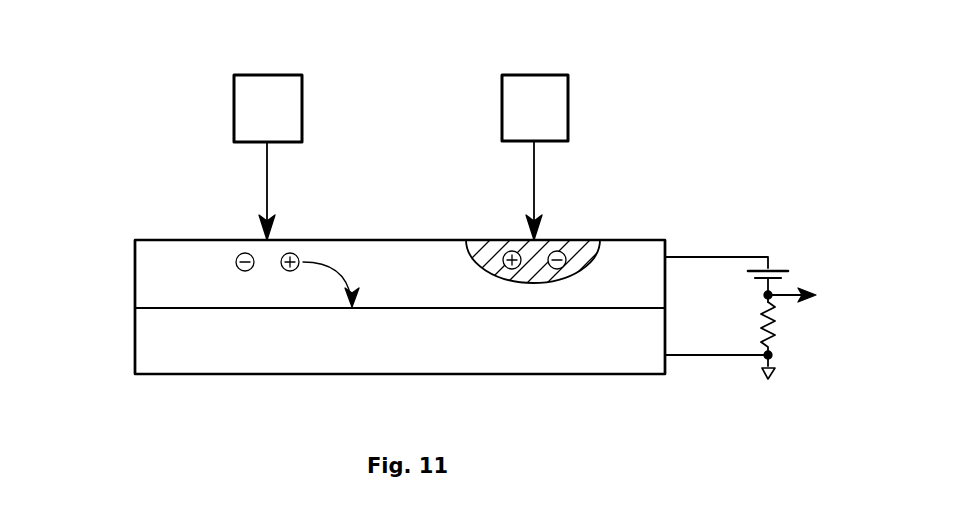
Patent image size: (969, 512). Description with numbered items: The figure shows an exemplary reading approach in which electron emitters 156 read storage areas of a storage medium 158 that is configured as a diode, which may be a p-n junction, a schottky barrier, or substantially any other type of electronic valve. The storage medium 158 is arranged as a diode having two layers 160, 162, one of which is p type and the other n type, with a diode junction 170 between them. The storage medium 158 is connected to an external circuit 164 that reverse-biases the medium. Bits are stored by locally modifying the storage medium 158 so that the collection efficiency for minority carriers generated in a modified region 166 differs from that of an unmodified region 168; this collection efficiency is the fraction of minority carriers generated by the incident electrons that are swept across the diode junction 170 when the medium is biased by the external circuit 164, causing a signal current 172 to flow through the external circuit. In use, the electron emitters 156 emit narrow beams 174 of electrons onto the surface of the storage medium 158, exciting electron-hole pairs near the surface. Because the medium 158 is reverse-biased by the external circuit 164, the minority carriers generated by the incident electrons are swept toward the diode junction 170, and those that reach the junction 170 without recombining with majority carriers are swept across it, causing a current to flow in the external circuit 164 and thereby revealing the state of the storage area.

The electron emitter 156 is at (278, 83).
The storage medium 158 is at (540, 387).
The layer 160 is at (135, 266).
The layer 162 is at (135, 338).
The external circuit 164 is at (772, 267).
The modified region 166 is at (328, 240).
The unmodified region 168 is at (590, 240).
The diode junction 170 is at (234, 308).
The signal current 172 is at (813, 296).
The narrow beam of electrons 174 is at (266, 190).